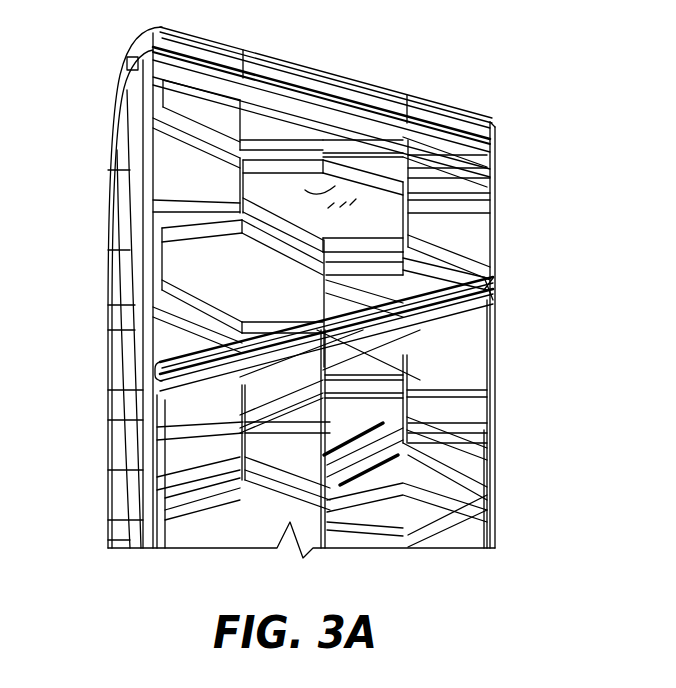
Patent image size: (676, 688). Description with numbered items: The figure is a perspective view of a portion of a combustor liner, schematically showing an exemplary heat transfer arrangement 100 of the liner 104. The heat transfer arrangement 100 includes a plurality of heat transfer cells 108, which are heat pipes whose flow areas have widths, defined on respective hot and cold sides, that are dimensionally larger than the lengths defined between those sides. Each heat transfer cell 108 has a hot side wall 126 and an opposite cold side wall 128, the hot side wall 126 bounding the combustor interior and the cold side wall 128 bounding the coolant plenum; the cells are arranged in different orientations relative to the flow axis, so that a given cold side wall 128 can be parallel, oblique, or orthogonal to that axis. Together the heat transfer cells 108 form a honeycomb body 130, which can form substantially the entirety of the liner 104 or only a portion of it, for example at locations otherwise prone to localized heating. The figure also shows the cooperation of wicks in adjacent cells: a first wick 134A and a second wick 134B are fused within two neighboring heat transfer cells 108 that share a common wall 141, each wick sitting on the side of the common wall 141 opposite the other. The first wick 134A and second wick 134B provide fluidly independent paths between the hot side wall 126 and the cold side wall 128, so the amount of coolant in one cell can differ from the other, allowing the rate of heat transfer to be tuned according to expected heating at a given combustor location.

The heat transfer arrangement 100 is at (617, 311).
The liner 104 is at (450, 103).
The heat transfer cells 108 is at (455, 172).
The hot side wall 126 is at (345, 205).
The cold side wall 128 is at (318, 183).
The honeycomb body 130 is at (75, 413).
The first wick 134A is at (347, 443).
The second wick 134B is at (380, 466).
The common wall 141 is at (373, 440).